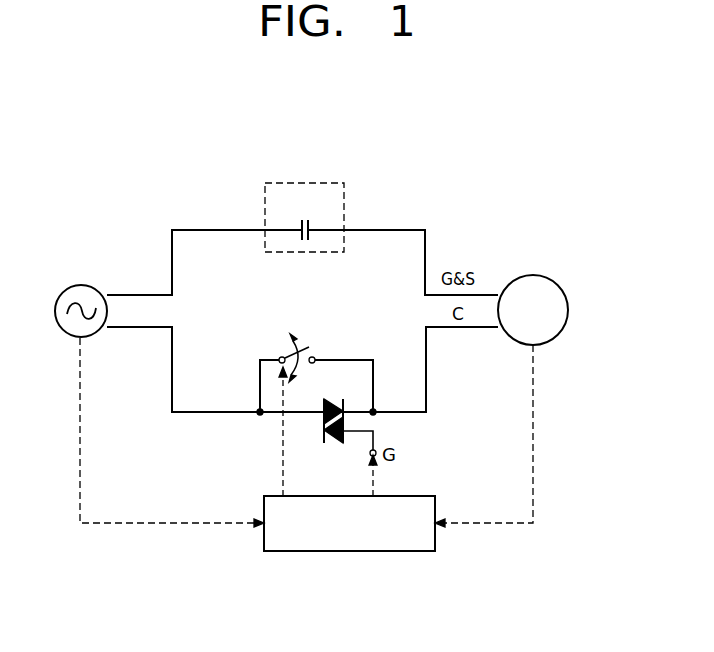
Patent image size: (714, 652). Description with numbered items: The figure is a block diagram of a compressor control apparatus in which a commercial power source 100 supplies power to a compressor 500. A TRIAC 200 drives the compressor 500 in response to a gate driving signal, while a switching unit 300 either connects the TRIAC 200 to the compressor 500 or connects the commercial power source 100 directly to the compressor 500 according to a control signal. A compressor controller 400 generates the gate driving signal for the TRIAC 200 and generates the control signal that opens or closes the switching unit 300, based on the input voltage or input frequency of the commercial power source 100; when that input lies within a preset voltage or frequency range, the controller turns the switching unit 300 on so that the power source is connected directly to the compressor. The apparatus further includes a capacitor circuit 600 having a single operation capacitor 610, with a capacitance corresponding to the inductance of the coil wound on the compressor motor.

The commercial power source 100 is at (78, 284).
The TRIAC 200 is at (335, 445).
The switching unit 300 is at (287, 352).
The compressor controller 400 is at (350, 551).
The compressor 500 is at (534, 275).
The capacitor circuit 600 is at (302, 182).
The capacitor 610 is at (305, 219).